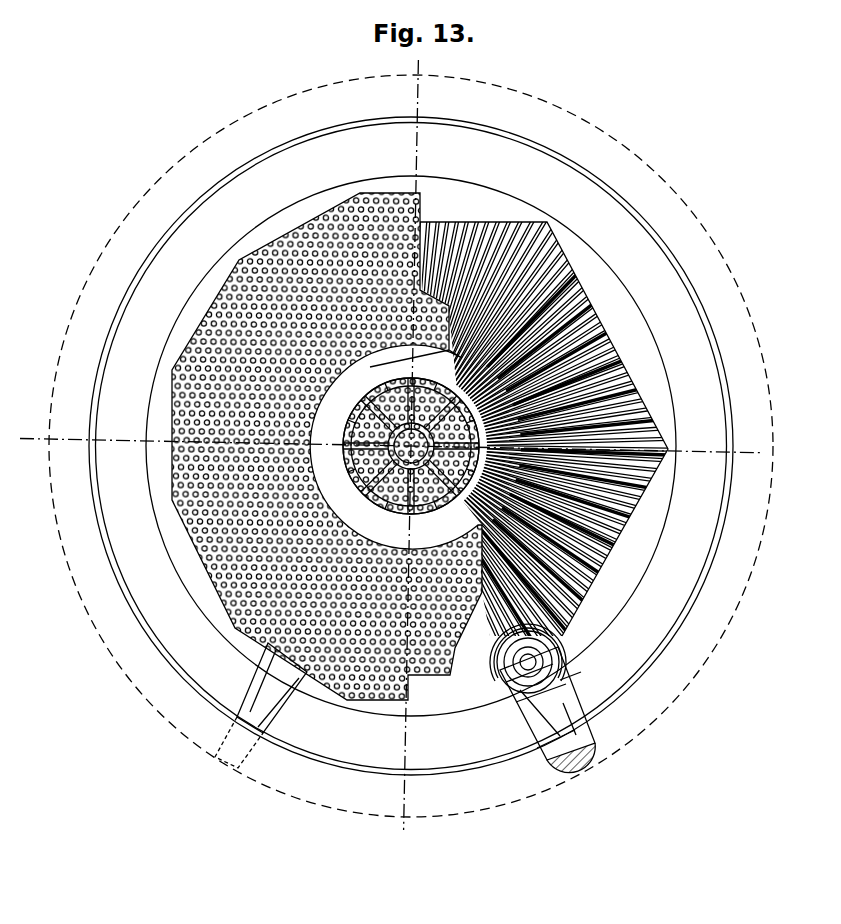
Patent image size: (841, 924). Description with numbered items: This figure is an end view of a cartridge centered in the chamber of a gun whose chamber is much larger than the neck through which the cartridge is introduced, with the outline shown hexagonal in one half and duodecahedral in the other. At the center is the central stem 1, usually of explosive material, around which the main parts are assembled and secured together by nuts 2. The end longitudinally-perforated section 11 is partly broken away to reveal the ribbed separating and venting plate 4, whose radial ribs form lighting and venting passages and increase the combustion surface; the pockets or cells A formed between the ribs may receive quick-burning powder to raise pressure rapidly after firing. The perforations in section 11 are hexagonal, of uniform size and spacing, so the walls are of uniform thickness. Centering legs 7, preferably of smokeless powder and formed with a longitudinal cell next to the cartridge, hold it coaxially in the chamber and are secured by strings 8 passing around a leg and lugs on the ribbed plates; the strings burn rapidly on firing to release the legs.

The central stem 1 is at (411, 446).
The nut 2 is at (447, 300).
The ribbed plate 4 is at (586, 296).
The pocket A is at (575, 432).
The centering leg 7 is at (275, 706).
The string 8 is at (558, 655).
The perforated section 11 is at (312, 229).